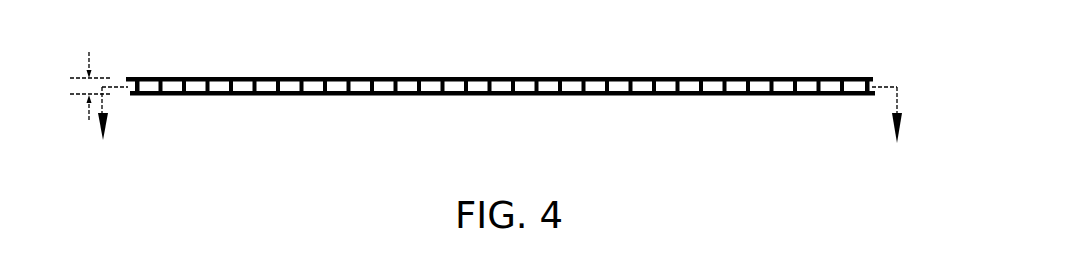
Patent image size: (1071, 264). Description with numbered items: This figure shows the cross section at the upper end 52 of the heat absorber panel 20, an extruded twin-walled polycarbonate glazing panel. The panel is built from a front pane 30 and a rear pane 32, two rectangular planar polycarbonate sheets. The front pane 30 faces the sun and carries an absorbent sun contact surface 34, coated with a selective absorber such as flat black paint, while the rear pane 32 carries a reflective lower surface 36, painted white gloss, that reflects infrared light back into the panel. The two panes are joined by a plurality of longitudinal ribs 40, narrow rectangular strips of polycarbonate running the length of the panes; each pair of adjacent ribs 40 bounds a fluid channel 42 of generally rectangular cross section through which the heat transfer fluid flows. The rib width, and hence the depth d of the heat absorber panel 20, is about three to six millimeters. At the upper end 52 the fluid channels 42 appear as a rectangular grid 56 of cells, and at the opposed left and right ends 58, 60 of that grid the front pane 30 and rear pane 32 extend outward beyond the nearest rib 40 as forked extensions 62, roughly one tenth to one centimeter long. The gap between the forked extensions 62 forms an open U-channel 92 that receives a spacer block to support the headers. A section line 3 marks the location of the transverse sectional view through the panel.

The heat absorber panel 20 is at (504, 105).
The front pane 30 is at (502, 122).
The absorbent sun contact surface 34 is at (502, 122).
The rear pane 32 is at (499, 45).
The reflective lower surface 36 is at (499, 45).
The longitudinal ribs 40 is at (502, 100).
The fluid channels 42 is at (468, 78).
The upper end 52 is at (800, 96).
The rectangular grid 56 is at (515, 78).
The left end 58 is at (127, 97).
The right end 60 is at (870, 100).
The forked extensions 62 is at (131, 97).
The open U-channel 92 is at (127, 78).
The section line 3- 3 is at (501, 133).
The depth d is at (79, 86).